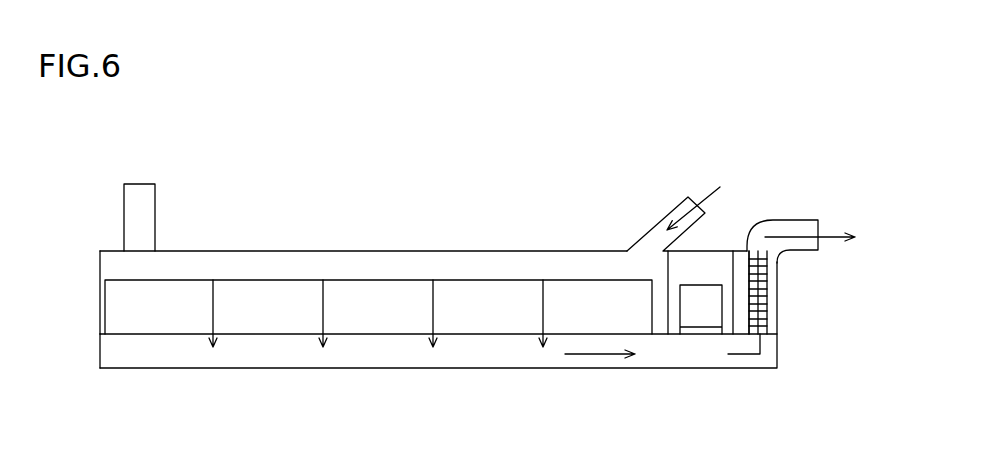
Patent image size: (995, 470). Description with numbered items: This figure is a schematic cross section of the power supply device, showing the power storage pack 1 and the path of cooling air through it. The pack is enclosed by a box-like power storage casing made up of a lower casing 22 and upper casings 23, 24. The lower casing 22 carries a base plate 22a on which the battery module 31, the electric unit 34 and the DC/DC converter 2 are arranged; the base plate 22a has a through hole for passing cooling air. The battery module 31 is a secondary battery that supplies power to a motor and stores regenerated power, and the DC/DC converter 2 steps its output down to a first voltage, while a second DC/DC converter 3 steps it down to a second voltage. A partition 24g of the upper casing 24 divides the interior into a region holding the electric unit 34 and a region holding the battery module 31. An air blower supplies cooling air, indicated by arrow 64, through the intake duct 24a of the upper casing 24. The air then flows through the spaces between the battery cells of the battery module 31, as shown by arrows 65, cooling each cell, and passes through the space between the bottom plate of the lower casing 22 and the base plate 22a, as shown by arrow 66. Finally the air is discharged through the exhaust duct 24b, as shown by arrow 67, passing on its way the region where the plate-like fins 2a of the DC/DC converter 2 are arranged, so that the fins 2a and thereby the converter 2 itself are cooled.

The power storage pack 1 is at (570, 149).
The DC/DC converter 2 is at (741, 270).
The fins 2a is at (767, 295).
The DC/DC converter 3 is at (138, 208).
The lower casing 22 is at (100, 350).
The base plate 22a is at (377, 335).
The upper casing 23 is at (100, 304).
The upper casing 24 is at (619, 251).
The intake duct 24a is at (665, 233).
The exhaust duct 24b is at (792, 219).
The partition 24g is at (667, 320).
The battery module 31 is at (268, 280).
The electric unit 34 is at (702, 330).
The arrow 64 is at (705, 197).
The arrows 65 is at (443, 298).
The arrow 66 is at (592, 357).
The arrow 67 is at (827, 232).